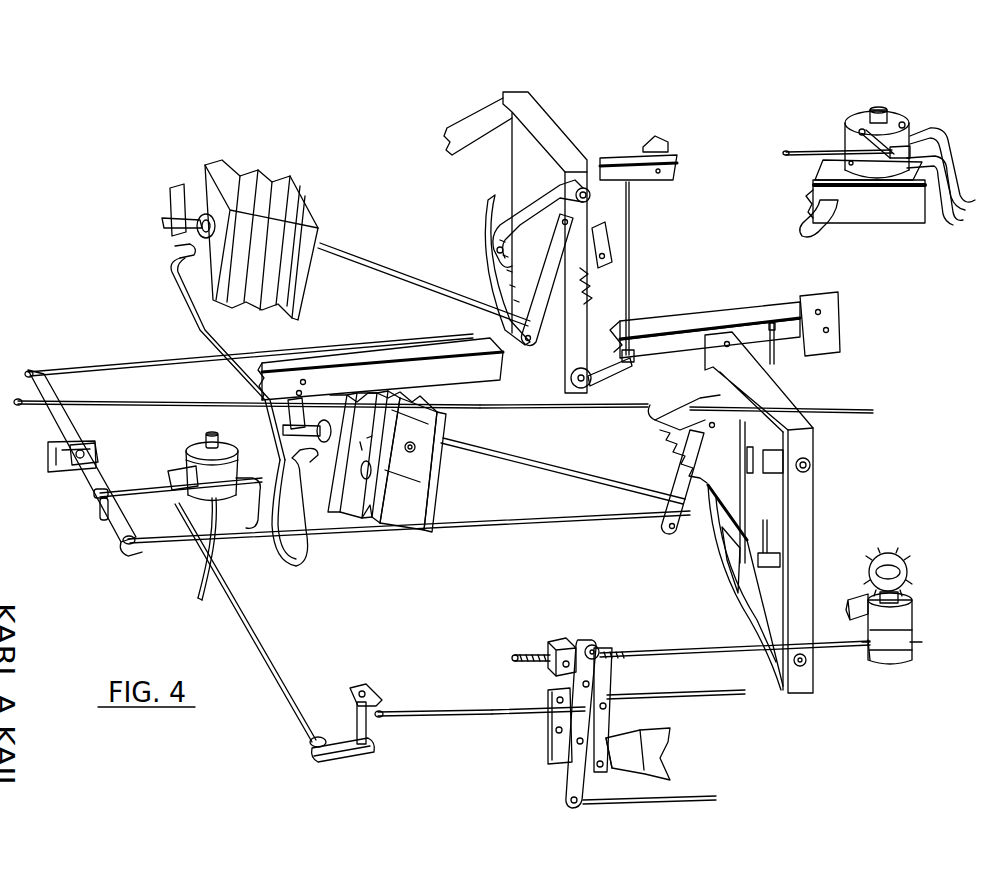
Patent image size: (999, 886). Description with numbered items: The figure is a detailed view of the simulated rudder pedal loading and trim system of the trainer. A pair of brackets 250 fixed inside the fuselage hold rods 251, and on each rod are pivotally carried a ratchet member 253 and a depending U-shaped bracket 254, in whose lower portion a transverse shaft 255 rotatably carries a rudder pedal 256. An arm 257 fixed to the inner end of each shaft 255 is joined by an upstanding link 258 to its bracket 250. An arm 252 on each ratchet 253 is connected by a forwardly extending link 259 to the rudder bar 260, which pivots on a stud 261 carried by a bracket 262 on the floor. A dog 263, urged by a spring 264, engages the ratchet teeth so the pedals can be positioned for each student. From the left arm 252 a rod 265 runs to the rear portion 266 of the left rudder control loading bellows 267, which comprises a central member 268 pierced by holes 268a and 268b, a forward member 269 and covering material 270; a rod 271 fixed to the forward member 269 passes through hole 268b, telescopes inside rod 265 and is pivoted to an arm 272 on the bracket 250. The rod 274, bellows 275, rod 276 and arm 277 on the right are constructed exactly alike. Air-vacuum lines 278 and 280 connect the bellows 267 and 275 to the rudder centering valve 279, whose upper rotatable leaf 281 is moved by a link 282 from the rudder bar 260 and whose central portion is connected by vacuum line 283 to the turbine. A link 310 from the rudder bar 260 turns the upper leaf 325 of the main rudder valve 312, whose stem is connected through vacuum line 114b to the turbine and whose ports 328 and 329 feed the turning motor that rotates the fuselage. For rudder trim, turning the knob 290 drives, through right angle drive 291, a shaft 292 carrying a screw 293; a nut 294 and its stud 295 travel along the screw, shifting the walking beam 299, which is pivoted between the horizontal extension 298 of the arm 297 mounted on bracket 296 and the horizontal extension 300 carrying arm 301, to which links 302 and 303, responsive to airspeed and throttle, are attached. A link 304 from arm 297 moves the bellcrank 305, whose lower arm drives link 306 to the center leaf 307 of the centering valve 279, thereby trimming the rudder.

The vacuum line 114b is at (828, 218).
The bracket 250 is at (555, 130).
The rod 251 is at (590, 196).
The arm 252 is at (684, 472).
The ratchet member 253 is at (575, 210).
The U-shaped bracket 254 is at (580, 348).
The transverse shaft 255 is at (588, 385).
The rudder pedal 256 is at (490, 212).
The arm 257 is at (612, 372).
The link 258 is at (631, 250).
The link 259 is at (110, 372).
The rudder bar 260 is at (110, 533).
The stud 261 is at (97, 452).
The bracket 262 is at (55, 462).
The dog 263 is at (614, 236).
The spring 264 is at (592, 296).
The rod 265 is at (544, 478).
The rear portion 266 is at (428, 518).
The left rudder control loading bellows 267 is at (428, 476).
The central member 268 is at (399, 476).
The holes 268a is at (372, 474).
The hole 268b is at (408, 455).
The forward member 269 is at (337, 510).
The covering material 270 is at (372, 518).
The rod 271 is at (315, 424).
The arm 272 is at (288, 412).
The rod 274 is at (383, 270).
The right rudder control loading bellows 275 is at (316, 192).
The rod 276 is at (195, 226).
The arm 277 is at (172, 200).
The air-vacuum line 278 is at (293, 566).
The rudder centering valve 279 is at (190, 440).
The air-vacuum line 280 is at (220, 338).
The upper rotatable leaf 281 is at (220, 450).
The link 282 is at (150, 490).
The vacuum line 283 is at (208, 575).
The knob 290 is at (906, 566).
The right angle drive 291 is at (908, 662).
The shaft 292 is at (672, 650).
The screw 293 is at (530, 653).
The nut 294 is at (564, 641).
The stud 295 is at (560, 668).
The bracket 296 is at (643, 765).
The arm 297 is at (610, 688).
The horizontal extension 298 is at (595, 648).
The walking beam 299 is at (584, 768).
The horizontal extension 300 is at (556, 756).
The arm 301 is at (540, 718).
The link 302 is at (660, 695).
The link 303 is at (695, 797).
The link 304 is at (456, 711).
The bellcrank 305 is at (366, 740).
The link 306 is at (258, 626).
The center leaf 307 is at (192, 462).
The link 310 is at (118, 405).
The main rudder valve 312 is at (877, 96).
The upper rotatable leaf 325 is at (890, 120).
The port 328 is at (948, 165).
The port 329 is at (945, 134).